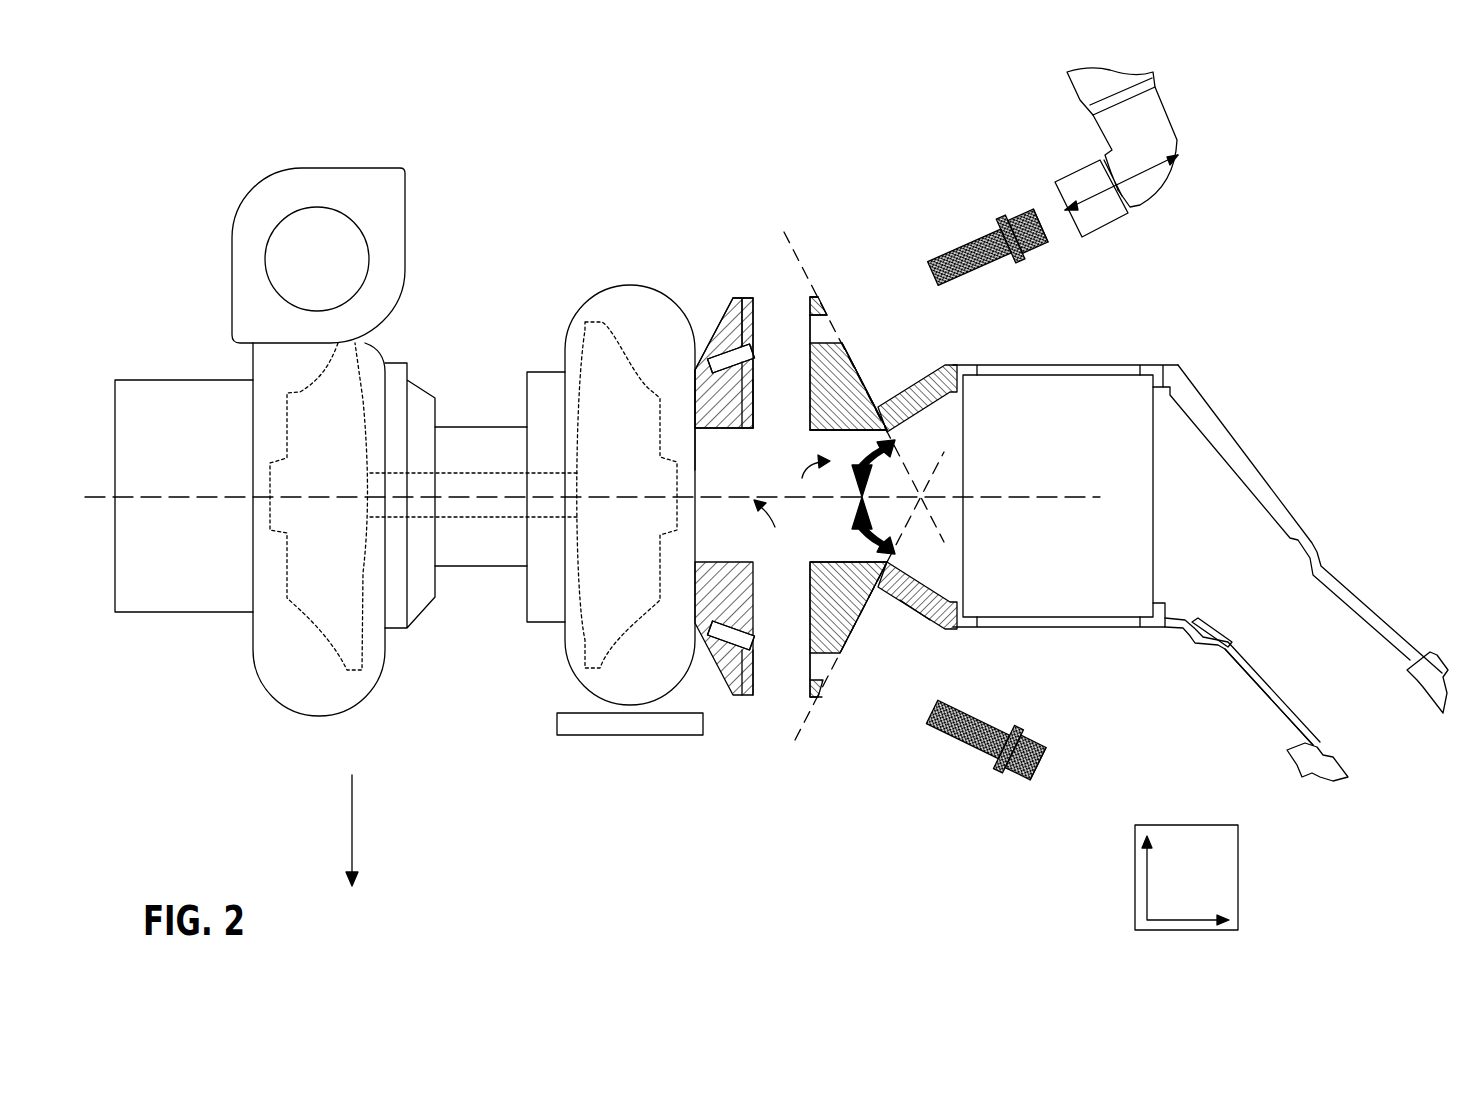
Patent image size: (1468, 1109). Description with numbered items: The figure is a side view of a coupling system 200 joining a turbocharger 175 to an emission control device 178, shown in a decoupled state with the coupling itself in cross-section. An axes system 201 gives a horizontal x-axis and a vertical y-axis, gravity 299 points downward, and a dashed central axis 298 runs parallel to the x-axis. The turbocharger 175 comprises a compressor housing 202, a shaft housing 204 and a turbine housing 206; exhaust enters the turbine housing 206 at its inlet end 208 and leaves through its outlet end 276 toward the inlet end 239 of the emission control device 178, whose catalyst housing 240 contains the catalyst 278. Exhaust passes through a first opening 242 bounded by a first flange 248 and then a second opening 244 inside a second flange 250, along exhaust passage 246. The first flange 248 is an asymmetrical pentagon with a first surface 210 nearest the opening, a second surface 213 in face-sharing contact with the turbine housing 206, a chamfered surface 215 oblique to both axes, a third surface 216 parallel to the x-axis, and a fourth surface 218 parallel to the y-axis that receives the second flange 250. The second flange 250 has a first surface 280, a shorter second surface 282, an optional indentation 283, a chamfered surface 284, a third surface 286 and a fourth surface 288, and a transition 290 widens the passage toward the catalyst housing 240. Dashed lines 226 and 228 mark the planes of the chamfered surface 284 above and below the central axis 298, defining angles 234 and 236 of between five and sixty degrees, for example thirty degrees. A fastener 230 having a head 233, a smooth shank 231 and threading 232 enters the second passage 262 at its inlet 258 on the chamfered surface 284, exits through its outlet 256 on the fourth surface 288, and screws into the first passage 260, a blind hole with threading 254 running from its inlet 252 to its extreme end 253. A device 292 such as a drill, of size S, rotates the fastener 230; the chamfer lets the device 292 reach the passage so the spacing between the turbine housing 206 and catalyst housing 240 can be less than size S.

The turbocharger 175 is at (505, 712).
The emission control device 178 is at (1142, 712).
The coupling system 200 is at (748, 200).
The axes system 201 is at (1238, 850).
The compressor housing 202 is at (420, 380).
The shaft housing 204 is at (483, 427).
The turbine housing 206 is at (578, 300).
The inlet end 208 is at (658, 735).
The first surface 210 is at (697, 380).
The second surface 213 is at (697, 372).
The chamfered surface 215 is at (728, 310).
The third surface 216 is at (743, 296).
The fourth surface 218 is at (754, 300).
The dashed line 226 is at (790, 252).
The dashed line 228 is at (797, 742).
The fastener 230 is at (1022, 228).
The shank 231 is at (987, 240).
The threading 232 is at (946, 268).
The head 233 is at (1035, 250).
The angle 234 is at (862, 468).
The angle 236 is at (860, 530).
The inlet end 239 is at (925, 392).
The catalyst housing 240 is at (1080, 365).
The opening 242 is at (768, 525).
The second opening 244 is at (808, 476).
The exhaust passage 246 is at (1275, 700).
The first flange 248 is at (752, 400).
The second flange 250 is at (810, 385).
The inlet 252 is at (755, 353).
The extreme end 253 is at (714, 622).
The threading 254 is at (708, 430).
The outlet 256 is at (808, 340).
The inlet 258 is at (838, 355).
The first passage 260 is at (740, 296).
The second passage 262 is at (818, 297).
The outlet end 276 is at (695, 445).
The catalyst 278 is at (963, 545).
The first surface 280 is at (888, 432).
The second surface 282 is at (866, 398).
The indentation 283 is at (852, 378).
The chamfered surface 284 is at (845, 360).
The third surface 286 is at (818, 296).
The fourth surface 288 is at (812, 312).
The transition 290 is at (914, 612).
The device 292 is at (1175, 150).
The central axis 298 is at (1018, 497).
The gravity 299 is at (330, 830).
The size S is at (1178, 160).